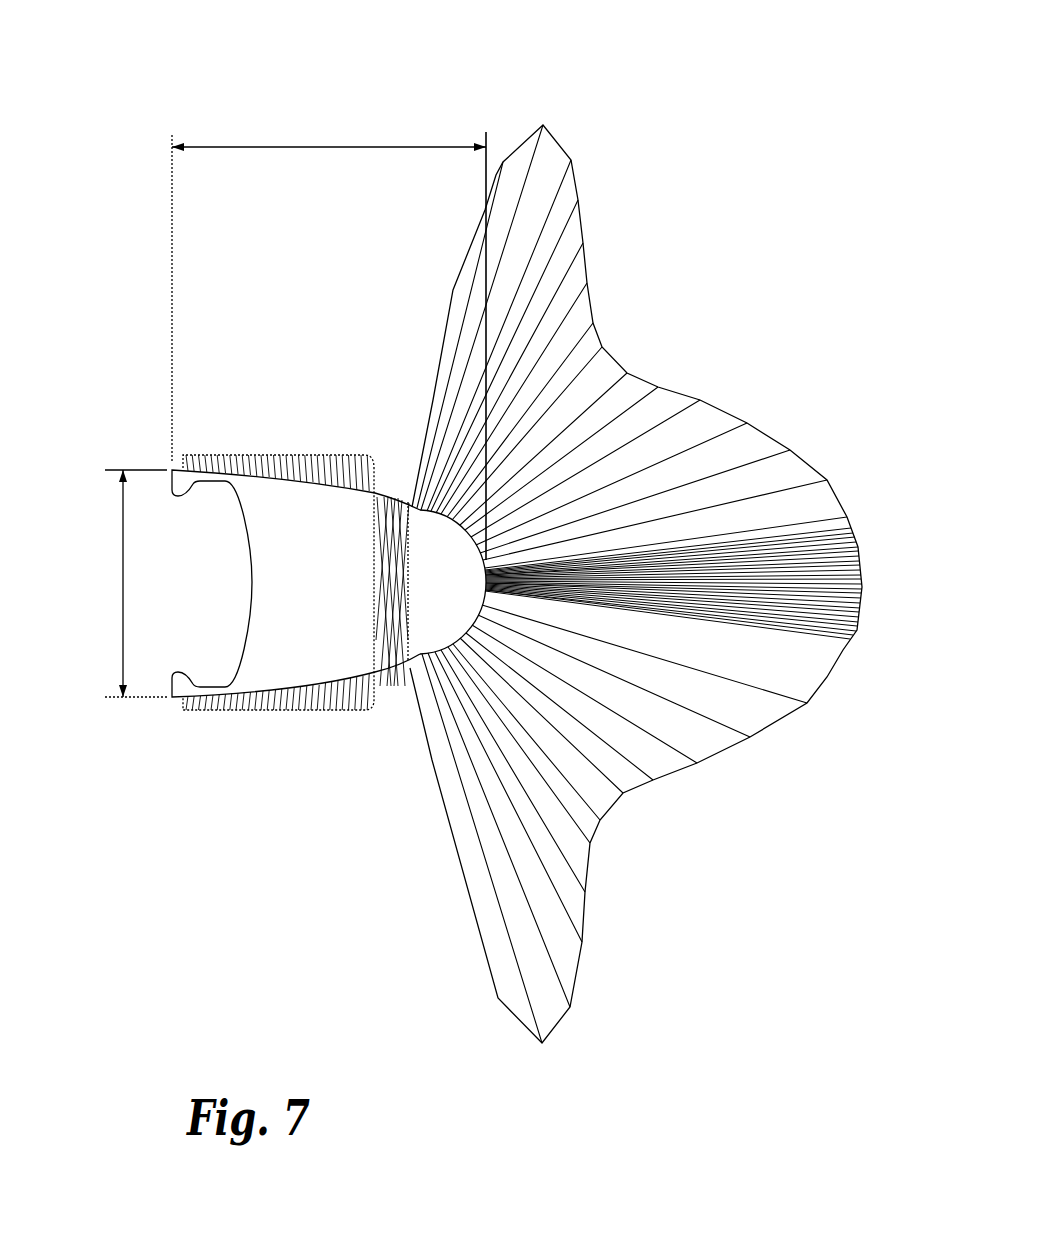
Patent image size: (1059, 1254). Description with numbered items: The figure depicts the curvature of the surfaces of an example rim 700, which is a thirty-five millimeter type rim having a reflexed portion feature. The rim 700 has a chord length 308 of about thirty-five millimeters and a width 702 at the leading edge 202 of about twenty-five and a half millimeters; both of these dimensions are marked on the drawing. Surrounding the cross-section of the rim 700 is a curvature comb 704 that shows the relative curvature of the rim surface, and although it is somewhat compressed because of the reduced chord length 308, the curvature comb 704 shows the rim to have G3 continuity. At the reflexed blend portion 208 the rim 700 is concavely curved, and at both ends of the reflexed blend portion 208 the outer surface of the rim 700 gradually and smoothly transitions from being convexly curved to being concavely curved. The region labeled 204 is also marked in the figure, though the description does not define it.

The rim 700 is at (645, 526).
The curvature comb 704 is at (577, 200).
The primary light emission lobe 204 is at (492, 566).
The leading edge 202 is at (297, 586).
The reflexed blend portion 208 is at (394, 697).
The chord length 308 is at (330, 145).
The width 702 is at (122, 588).